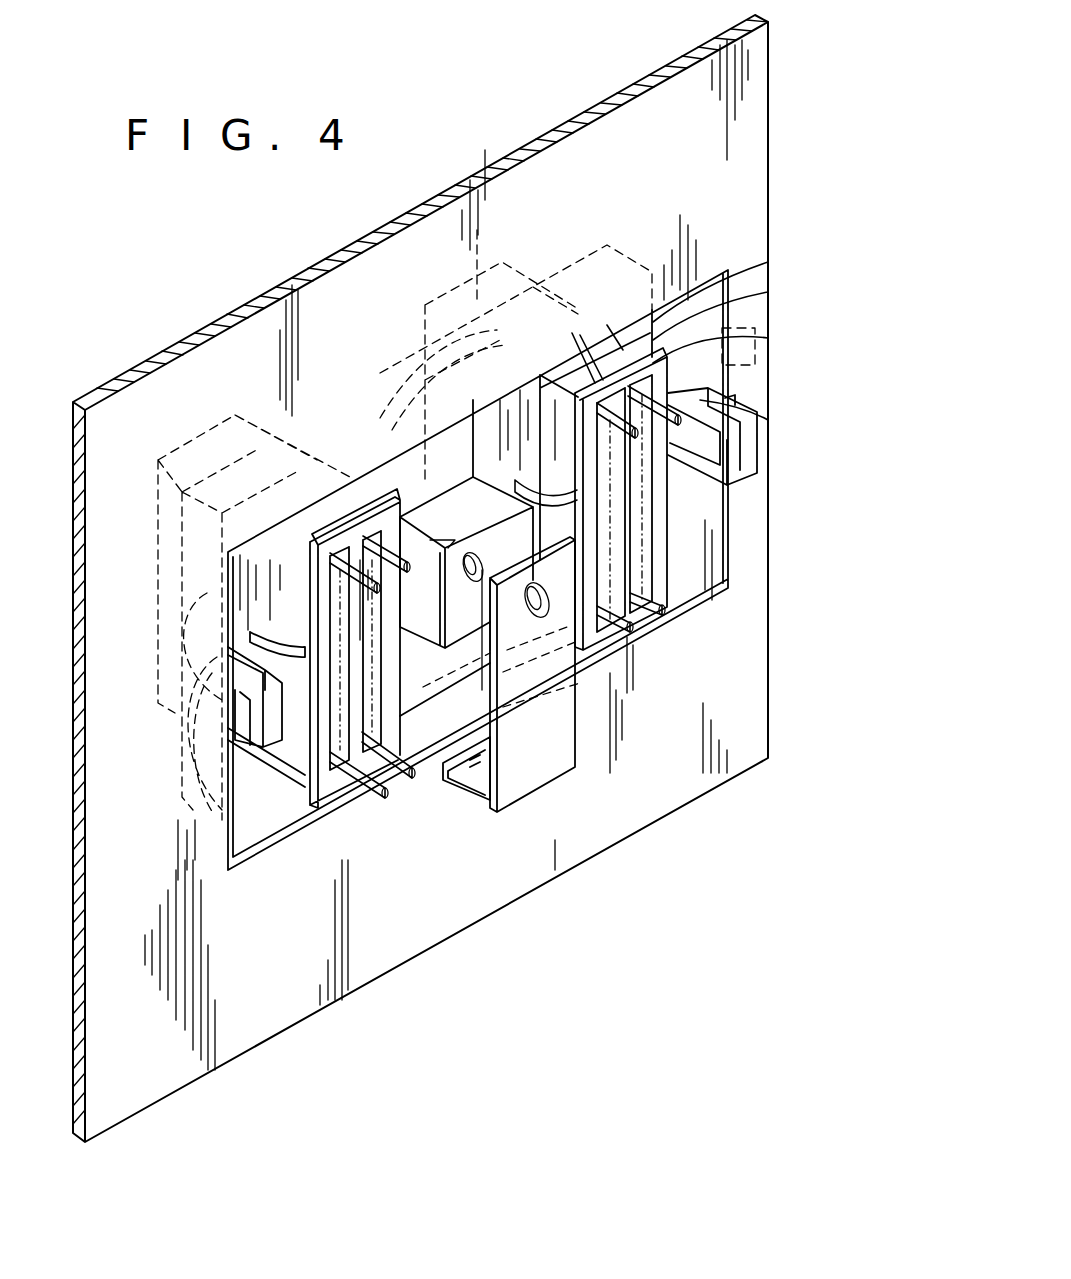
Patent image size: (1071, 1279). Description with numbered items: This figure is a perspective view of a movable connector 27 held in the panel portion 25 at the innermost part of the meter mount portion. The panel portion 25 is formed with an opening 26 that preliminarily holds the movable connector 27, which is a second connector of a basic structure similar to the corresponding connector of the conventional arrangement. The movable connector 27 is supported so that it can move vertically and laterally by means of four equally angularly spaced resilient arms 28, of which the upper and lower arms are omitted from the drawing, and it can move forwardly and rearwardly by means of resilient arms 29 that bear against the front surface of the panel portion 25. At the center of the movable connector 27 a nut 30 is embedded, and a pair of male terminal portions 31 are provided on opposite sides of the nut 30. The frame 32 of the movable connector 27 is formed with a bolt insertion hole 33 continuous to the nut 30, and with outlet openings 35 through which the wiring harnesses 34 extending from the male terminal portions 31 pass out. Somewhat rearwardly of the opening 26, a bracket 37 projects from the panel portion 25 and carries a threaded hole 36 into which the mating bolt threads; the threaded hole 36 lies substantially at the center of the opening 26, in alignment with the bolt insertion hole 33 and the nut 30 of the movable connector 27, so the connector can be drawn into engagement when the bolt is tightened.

The panel portion 25 is at (385, 905).
The opening 26 is at (707, 297).
The movable connector 27 is at (708, 350).
The resilient arm 28 is at (758, 440).
The resilient arm 29 is at (714, 355).
The nut 30 is at (385, 425).
The male terminal portion 31 is at (228, 432).
The frame 32 is at (507, 410).
The bolt insertion hole 33 is at (490, 600).
The wiring harness 34 is at (672, 592).
The outlet opening 35 is at (393, 775).
The threaded hole 36 is at (548, 603).
The bracket 37 is at (542, 665).